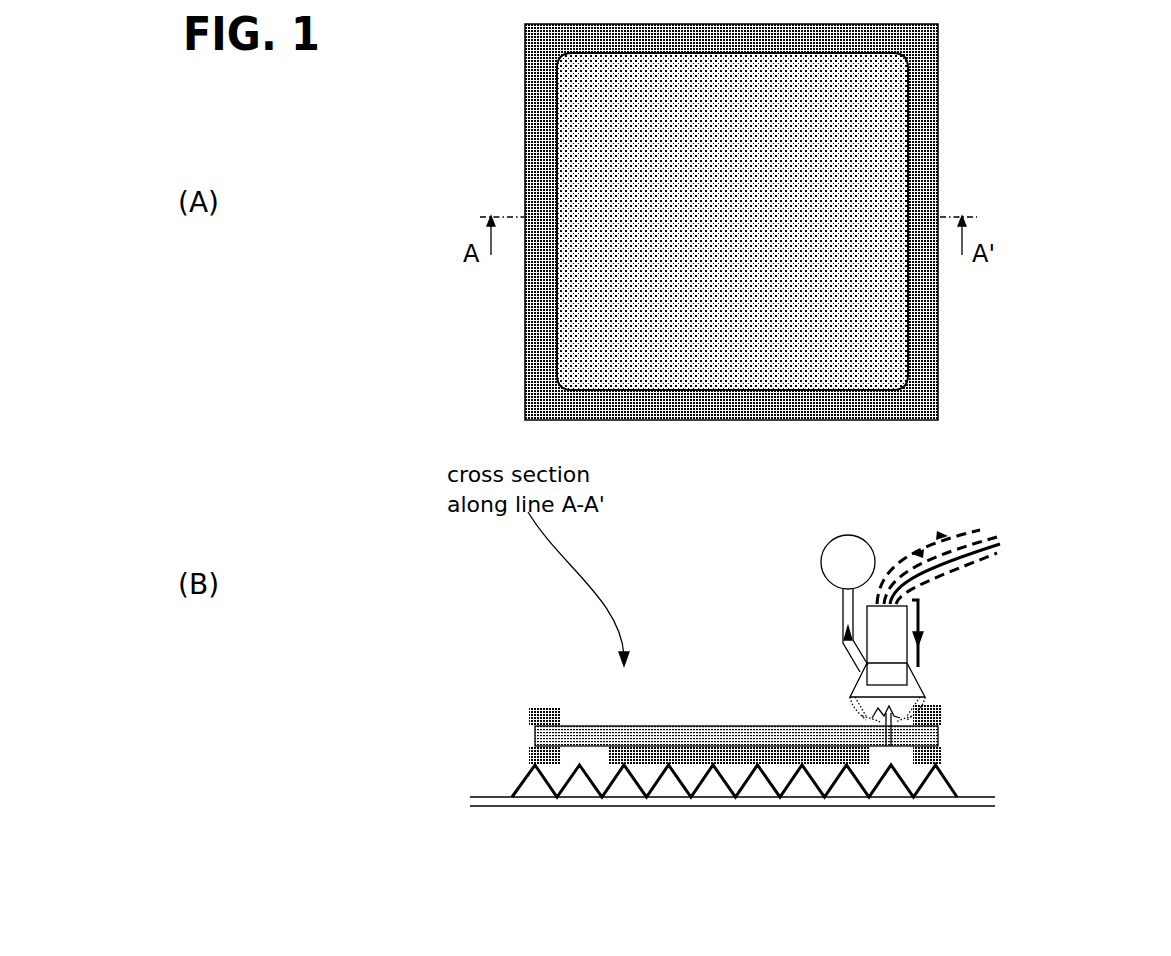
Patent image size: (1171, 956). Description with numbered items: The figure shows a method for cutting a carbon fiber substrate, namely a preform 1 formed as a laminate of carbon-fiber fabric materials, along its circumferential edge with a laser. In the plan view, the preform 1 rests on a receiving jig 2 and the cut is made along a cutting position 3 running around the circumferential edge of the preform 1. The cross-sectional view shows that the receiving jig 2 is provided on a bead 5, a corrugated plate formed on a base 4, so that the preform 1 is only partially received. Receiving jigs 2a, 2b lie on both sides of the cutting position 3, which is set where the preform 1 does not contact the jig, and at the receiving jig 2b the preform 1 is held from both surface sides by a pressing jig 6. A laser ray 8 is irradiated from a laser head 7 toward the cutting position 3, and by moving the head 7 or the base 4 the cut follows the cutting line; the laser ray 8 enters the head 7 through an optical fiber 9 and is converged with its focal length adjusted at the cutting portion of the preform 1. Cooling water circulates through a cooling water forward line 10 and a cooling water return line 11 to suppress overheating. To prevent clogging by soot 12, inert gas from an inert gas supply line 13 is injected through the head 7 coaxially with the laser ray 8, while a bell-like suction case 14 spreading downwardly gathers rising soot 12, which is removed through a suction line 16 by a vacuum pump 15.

The preform 1 is at (652, 178).
The receiving jig 2 is at (932, 343).
The receiving jig 2a is at (822, 760).
The receiving jig 2b is at (535, 752).
The cutting position 3 is at (908, 143).
The base 4 is at (623, 800).
The bead 5 is at (542, 780).
The pressing jig 6 is at (545, 395).
The laser head 7 is at (896, 625).
The laser ray 8 is at (940, 752).
The optical fiber 9 is at (998, 545).
The cooling water forward line 10 is at (997, 533).
The cooling water return line 11 is at (965, 527).
The soot 12 is at (868, 712).
The inert gas supply line 13 is at (996, 553).
The suction case 14 is at (895, 678).
The vacuum pump 15 is at (841, 535).
The suction line 16 is at (843, 615).